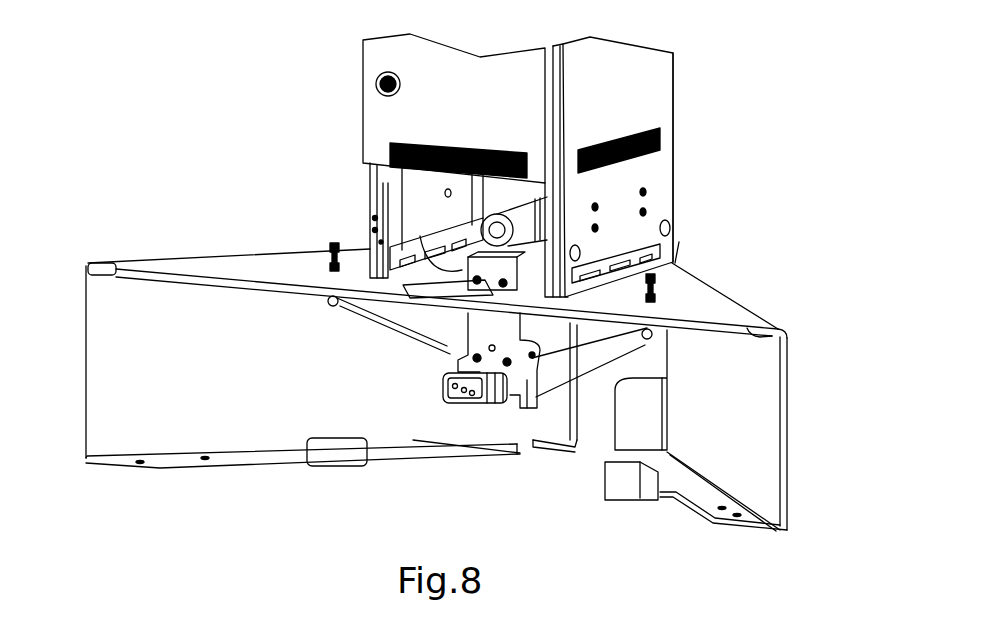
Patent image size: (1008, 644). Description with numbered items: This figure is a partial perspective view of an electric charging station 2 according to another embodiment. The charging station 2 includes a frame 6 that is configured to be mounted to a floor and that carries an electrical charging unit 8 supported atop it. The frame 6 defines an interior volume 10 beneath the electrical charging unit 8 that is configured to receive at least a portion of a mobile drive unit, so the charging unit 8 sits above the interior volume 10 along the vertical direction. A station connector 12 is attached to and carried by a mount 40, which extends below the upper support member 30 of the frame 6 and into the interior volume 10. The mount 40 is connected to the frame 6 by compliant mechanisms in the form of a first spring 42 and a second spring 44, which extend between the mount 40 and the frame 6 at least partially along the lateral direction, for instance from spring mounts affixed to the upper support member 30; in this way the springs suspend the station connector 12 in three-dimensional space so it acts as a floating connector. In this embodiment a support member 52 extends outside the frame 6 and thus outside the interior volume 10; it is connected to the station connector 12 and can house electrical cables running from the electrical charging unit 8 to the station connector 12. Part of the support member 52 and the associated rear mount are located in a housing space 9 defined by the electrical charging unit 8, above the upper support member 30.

The electric charging station 2 is at (745, 164).
The frame 6 is at (172, 240).
The electrical charging unit 8 is at (354, 103).
The housing space 9 is at (512, 192).
The interior volume 10 is at (258, 412).
The station connector 12 is at (462, 406).
The upper support member 30 is at (283, 270).
The mount 40 is at (487, 330).
The first spring 42 is at (400, 325).
The second spring 44 is at (590, 340).
The support member 52 is at (552, 378).